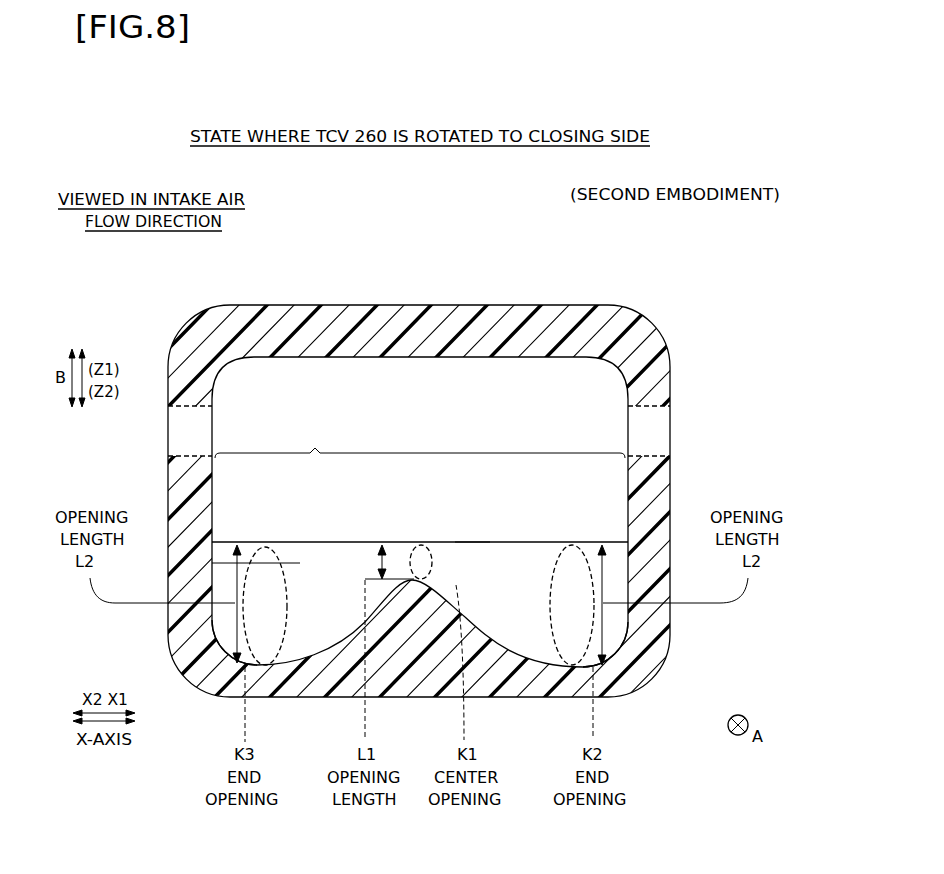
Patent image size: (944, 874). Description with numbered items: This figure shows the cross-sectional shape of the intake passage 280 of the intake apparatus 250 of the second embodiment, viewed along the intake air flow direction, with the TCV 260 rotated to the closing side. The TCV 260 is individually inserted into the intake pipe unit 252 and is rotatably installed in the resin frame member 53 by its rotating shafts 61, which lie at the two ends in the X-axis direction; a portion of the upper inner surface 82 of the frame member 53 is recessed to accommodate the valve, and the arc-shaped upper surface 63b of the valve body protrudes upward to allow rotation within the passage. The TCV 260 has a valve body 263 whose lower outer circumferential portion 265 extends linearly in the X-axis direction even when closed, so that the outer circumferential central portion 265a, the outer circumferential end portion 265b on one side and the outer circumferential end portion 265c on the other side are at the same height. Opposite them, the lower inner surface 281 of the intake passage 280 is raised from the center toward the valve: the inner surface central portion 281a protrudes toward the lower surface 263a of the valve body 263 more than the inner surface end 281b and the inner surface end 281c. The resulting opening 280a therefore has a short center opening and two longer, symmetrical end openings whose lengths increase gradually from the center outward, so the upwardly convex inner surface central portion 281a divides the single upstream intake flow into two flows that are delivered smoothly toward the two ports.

The frame member 53 is at (419, 446).
The intake pipe unit 252 is at (253, 305).
The upper inner surface 82 is at (372, 362).
The upper surface 63b is at (478, 382).
The valve body 263 is at (420, 400).
The TCV 260 is at (573, 406).
The intake apparatus 250 is at (447, 477).
The intake passage 280 is at (715, 279).
The rotating shafts 61 is at (178, 418).
The lower outer circumferential portion 265 is at (420, 443).
The outer circumferential central portion 265a is at (425, 540).
The outer circumferential end portion 265b is at (614, 540).
The outer circumferential end portion 265c is at (250, 540).
The lower surface 263a is at (479, 540).
The opening 280a is at (304, 564).
The lower inner surface 281 is at (335, 645).
The inner surface central portion 281a is at (418, 582).
The inner surface end 281b is at (600, 675).
The inner surface end 281c is at (225, 697).